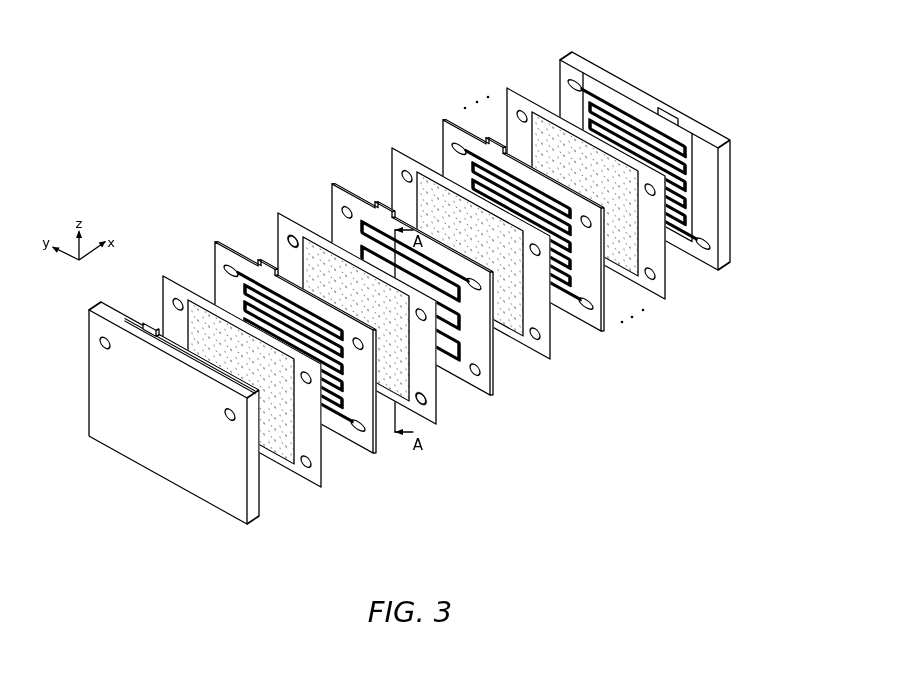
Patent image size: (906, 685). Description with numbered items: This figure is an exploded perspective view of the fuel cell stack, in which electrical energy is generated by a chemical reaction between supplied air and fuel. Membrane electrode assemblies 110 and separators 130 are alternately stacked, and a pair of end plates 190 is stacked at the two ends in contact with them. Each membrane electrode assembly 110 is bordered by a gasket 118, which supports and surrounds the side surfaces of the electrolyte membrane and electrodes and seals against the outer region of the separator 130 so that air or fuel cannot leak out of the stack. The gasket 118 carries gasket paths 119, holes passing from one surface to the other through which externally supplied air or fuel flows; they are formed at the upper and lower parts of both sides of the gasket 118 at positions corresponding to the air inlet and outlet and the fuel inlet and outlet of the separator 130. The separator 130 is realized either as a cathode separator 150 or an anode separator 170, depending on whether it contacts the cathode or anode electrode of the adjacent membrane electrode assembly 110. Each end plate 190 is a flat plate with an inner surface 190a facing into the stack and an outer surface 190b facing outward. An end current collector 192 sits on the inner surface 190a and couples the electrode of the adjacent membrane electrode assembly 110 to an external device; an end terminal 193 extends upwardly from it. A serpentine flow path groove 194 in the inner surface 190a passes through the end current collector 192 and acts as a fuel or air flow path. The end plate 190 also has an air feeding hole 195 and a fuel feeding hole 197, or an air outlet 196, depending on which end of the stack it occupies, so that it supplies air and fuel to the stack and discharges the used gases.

The membrane electrode assembly 110 is at (435, 287).
The gasket 118 is at (278, 238).
The gasket path 119 is at (294, 236).
The separator 130 is at (409, 300).
The cathode separator 150 is at (596, 325).
The anode separator 170 is at (434, 294).
The end plate 190 is at (416, 299).
The inner surface 190a is at (716, 268).
The outer surface 190b is at (734, 250).
The end current collector 192 is at (597, 84).
The end terminal 193 is at (669, 110).
The flow path groove 194 is at (617, 103).
The air feeding hole 195 is at (101, 342).
The air outlet 196 is at (700, 249).
The fuel feeding hole 197 is at (233, 410).